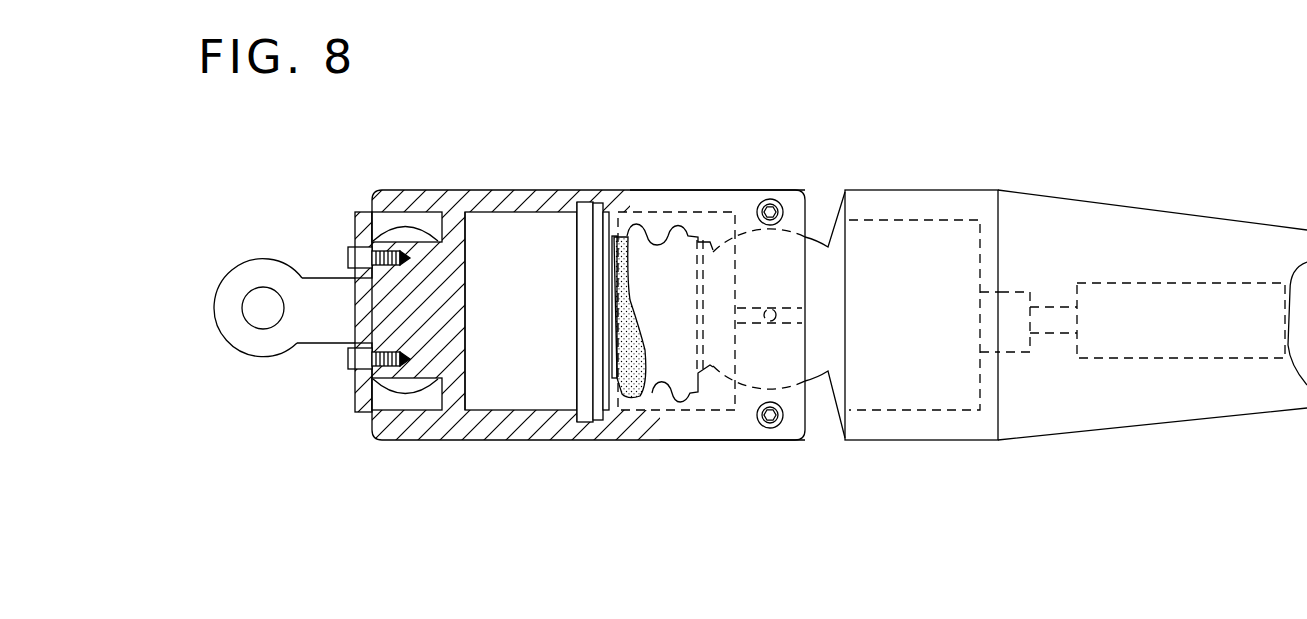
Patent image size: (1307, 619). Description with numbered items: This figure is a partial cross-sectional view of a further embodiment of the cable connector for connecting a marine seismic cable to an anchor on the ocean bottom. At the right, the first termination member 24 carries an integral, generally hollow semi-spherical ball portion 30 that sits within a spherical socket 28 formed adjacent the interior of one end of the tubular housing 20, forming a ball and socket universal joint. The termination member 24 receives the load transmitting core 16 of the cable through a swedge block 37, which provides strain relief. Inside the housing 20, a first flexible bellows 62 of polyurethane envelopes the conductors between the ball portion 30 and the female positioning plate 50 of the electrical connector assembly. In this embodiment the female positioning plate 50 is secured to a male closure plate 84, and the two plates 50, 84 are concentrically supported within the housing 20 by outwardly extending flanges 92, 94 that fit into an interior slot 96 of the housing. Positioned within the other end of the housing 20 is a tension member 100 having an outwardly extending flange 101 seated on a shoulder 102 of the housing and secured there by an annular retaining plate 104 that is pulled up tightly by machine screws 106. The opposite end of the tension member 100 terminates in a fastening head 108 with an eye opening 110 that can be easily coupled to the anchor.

The load transmitting core 16 is at (1045, 335).
The housing 20 is at (647, 190).
The first termination member 24 is at (837, 403).
The socket 28 is at (786, 230).
The ball portion 30 is at (743, 385).
The swedge block 37 is at (1010, 290).
The female positioning plate 50 is at (600, 415).
The first flexible bellows 62 is at (675, 226).
The male closure plate 84 is at (580, 382).
The outwardly extending flange 92 is at (578, 210).
The outwardly extending flange 94 is at (612, 212).
The interior slot 96 is at (590, 202).
The tension member 100 is at (322, 277).
The outwardly extending flange 101 is at (455, 412).
The shoulder 102 is at (432, 398).
The annular retaining plate 104 is at (357, 225).
The machine screws 106 is at (350, 252).
The fastening head 108 is at (245, 272).
The eye opening 110 is at (255, 317).